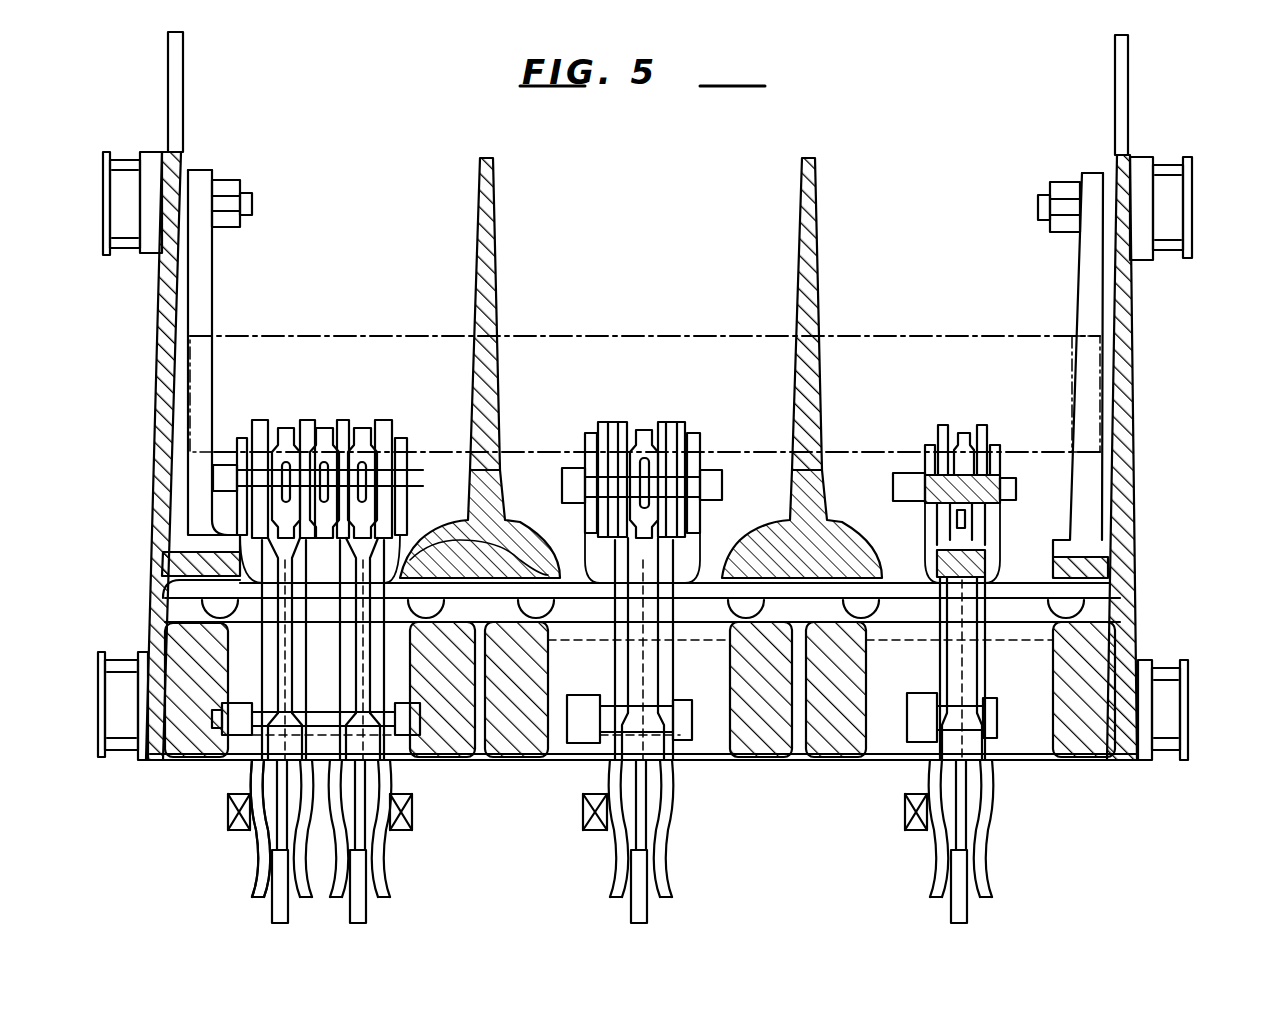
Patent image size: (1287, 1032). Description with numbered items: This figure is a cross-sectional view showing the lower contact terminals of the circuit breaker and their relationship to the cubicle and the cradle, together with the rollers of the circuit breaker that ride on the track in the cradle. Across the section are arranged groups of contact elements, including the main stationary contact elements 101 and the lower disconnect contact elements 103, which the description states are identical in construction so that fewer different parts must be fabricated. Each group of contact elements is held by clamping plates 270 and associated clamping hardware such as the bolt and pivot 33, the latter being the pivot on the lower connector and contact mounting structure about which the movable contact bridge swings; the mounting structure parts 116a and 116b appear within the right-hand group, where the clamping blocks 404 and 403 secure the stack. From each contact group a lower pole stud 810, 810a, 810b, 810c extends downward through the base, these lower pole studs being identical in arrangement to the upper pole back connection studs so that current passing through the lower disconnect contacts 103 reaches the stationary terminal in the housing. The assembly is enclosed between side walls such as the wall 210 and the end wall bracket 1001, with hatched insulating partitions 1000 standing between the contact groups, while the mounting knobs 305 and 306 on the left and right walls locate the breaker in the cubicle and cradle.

The left mounting knob 305 is at (104, 212).
The right mounting knob 306 is at (1194, 216).
The side wall of housing 210 is at (1136, 400).
The clamping plate 270 is at (246, 438).
The main stationary contact elements 101 is at (325, 426).
The contact blade 116a is at (943, 425).
The contact blade 116b is at (982, 425).
The pivot 33 is at (226, 480).
The insulating partition 1000 is at (404, 540).
The end wall bracket 1001 is at (164, 546).
The clamping block 404 is at (928, 530).
The clamping block 403 is at (998, 532).
The lower disconnect contact elements 103 is at (254, 865).
The lower pole stud 810c is at (270, 912).
The lower pole stud 810b is at (368, 912).
The lower pole stud 810a is at (628, 912).
The lower pole stud 810 is at (948, 912).